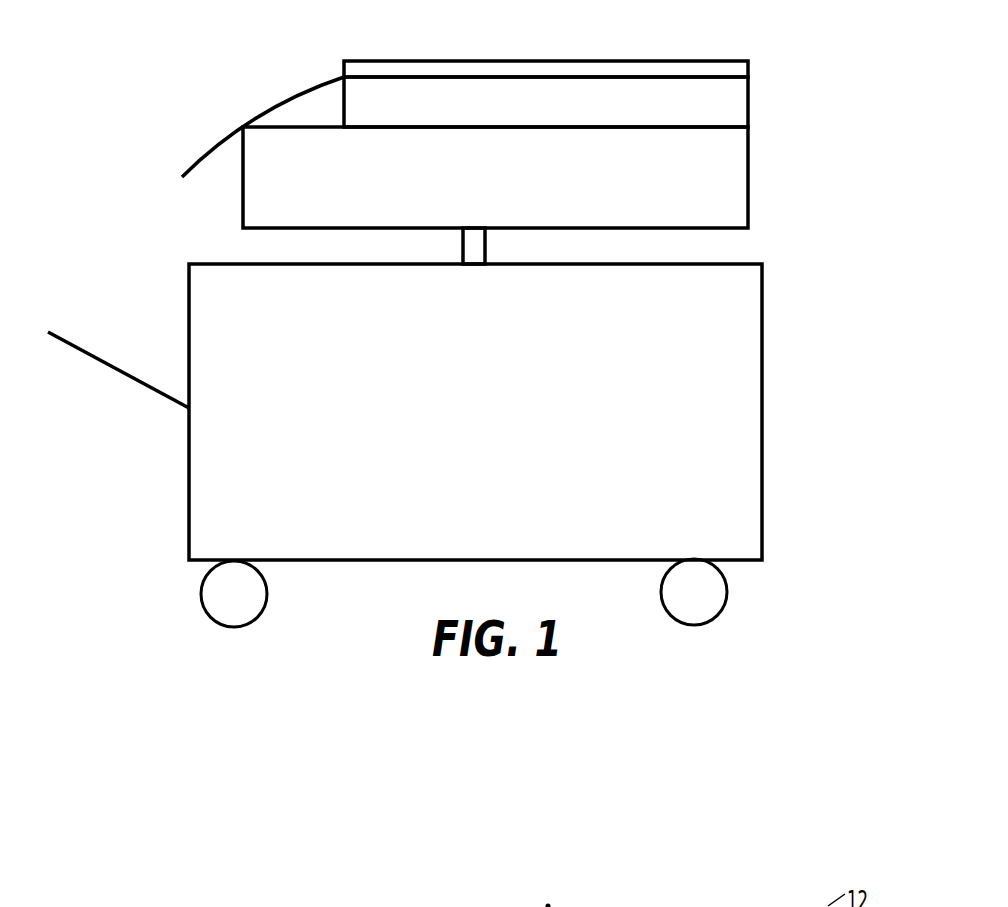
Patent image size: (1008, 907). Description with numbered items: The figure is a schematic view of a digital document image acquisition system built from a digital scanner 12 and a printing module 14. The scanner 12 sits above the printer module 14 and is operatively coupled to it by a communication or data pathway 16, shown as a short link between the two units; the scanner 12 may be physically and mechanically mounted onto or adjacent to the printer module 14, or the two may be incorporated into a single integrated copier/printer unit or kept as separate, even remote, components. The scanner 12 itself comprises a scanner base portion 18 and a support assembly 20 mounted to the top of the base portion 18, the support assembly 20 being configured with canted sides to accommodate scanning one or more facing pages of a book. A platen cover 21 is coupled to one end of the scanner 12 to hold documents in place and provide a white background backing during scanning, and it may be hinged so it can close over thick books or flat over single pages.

The digital scanner 12 is at (524, 122).
The printing module 14 is at (764, 348).
The communication or data pathway 16 is at (487, 247).
The scanner base portion 18 is at (243, 204).
The support assembly 20 is at (748, 98).
The platen cover 21 is at (655, 60).